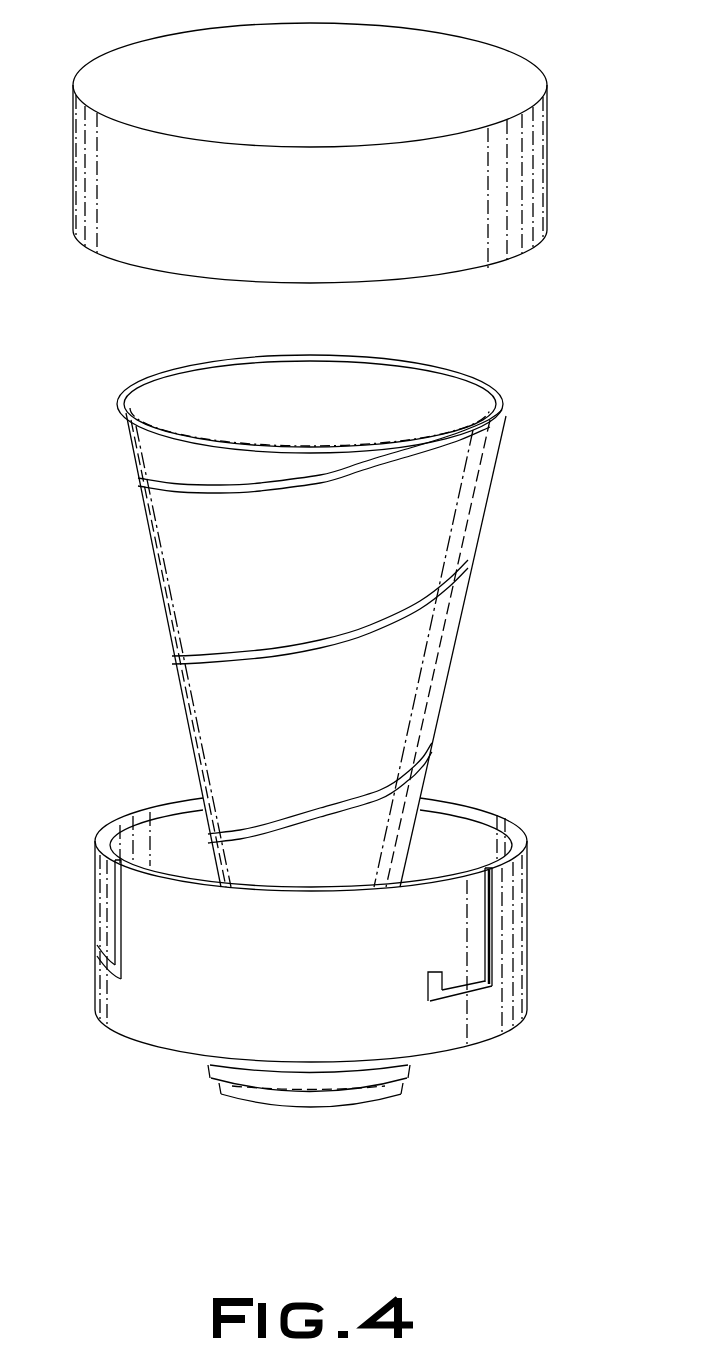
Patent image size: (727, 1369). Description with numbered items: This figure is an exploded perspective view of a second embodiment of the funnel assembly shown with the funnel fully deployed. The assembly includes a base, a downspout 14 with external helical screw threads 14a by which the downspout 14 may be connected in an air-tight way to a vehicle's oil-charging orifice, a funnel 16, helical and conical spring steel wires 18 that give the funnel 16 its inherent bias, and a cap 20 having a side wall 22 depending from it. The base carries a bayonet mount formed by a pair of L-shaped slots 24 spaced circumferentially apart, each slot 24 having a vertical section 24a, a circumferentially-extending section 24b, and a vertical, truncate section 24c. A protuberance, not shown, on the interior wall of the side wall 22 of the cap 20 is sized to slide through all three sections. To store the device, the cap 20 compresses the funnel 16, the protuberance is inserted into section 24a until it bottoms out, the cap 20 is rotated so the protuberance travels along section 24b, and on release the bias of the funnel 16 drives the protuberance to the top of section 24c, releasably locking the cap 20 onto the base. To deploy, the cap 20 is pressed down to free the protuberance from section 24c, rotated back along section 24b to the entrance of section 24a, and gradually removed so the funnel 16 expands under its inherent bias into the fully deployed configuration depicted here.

The downspout 14 is at (252, 1103).
The external helical screw threads 14a is at (310, 1084).
The funnel 16 is at (152, 545).
The helical and conical spring steel wires 18 is at (363, 632).
The cap 20 is at (281, 104).
The side wall 22 is at (334, 230).
The L-shaped slots 24 is at (156, 918).
The vertical section 24a is at (493, 922).
The circumferentially-extending section 24b is at (450, 1001).
The vertical, truncate section 24c is at (428, 980).